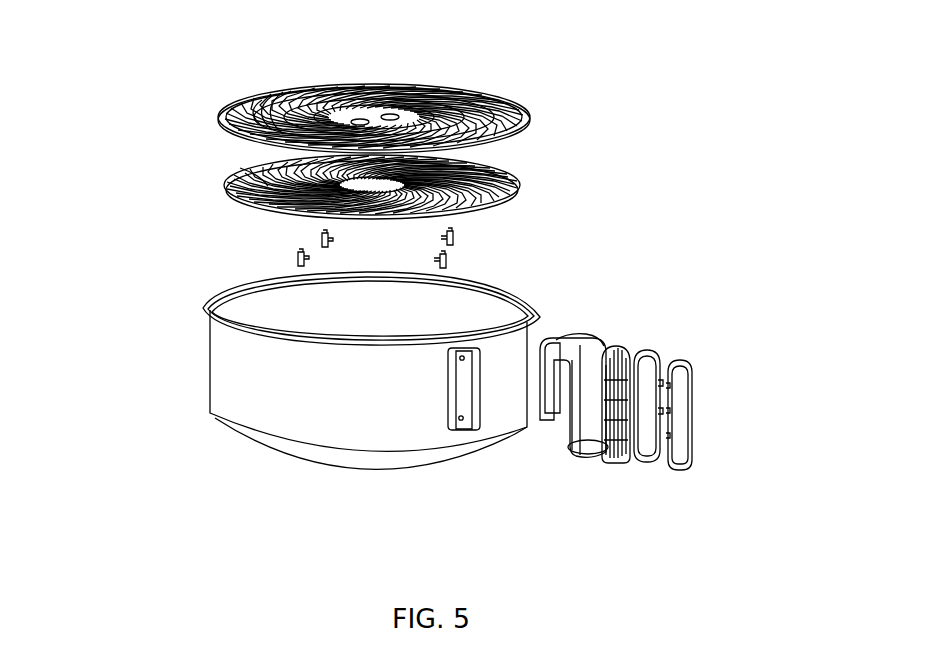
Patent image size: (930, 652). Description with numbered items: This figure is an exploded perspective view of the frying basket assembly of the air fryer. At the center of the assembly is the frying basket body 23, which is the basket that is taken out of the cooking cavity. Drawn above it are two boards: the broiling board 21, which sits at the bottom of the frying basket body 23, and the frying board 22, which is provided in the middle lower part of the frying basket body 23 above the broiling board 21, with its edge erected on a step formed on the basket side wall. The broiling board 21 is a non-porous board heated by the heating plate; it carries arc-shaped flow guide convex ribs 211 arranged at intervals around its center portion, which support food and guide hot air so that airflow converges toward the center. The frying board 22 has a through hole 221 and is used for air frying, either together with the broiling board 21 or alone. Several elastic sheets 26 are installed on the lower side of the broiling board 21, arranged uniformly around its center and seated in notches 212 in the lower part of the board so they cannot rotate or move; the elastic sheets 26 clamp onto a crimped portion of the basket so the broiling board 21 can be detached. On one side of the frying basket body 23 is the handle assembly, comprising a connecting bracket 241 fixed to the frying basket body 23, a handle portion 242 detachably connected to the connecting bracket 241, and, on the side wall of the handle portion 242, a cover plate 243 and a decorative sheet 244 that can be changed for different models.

The broiling board 21 is at (516, 184).
The flow guide convex ribs 211 is at (240, 168).
The notches 212 is at (318, 235).
The frying board 22 is at (500, 117).
The through hole 221 is at (282, 104).
The frying basket body 23 is at (277, 400).
The connecting bracket 241 is at (557, 337).
The handle portion 242 is at (615, 348).
The cover plate 243 is at (656, 358).
The decorative sheet 244 is at (680, 415).
The elastic sheets 26 is at (295, 258).